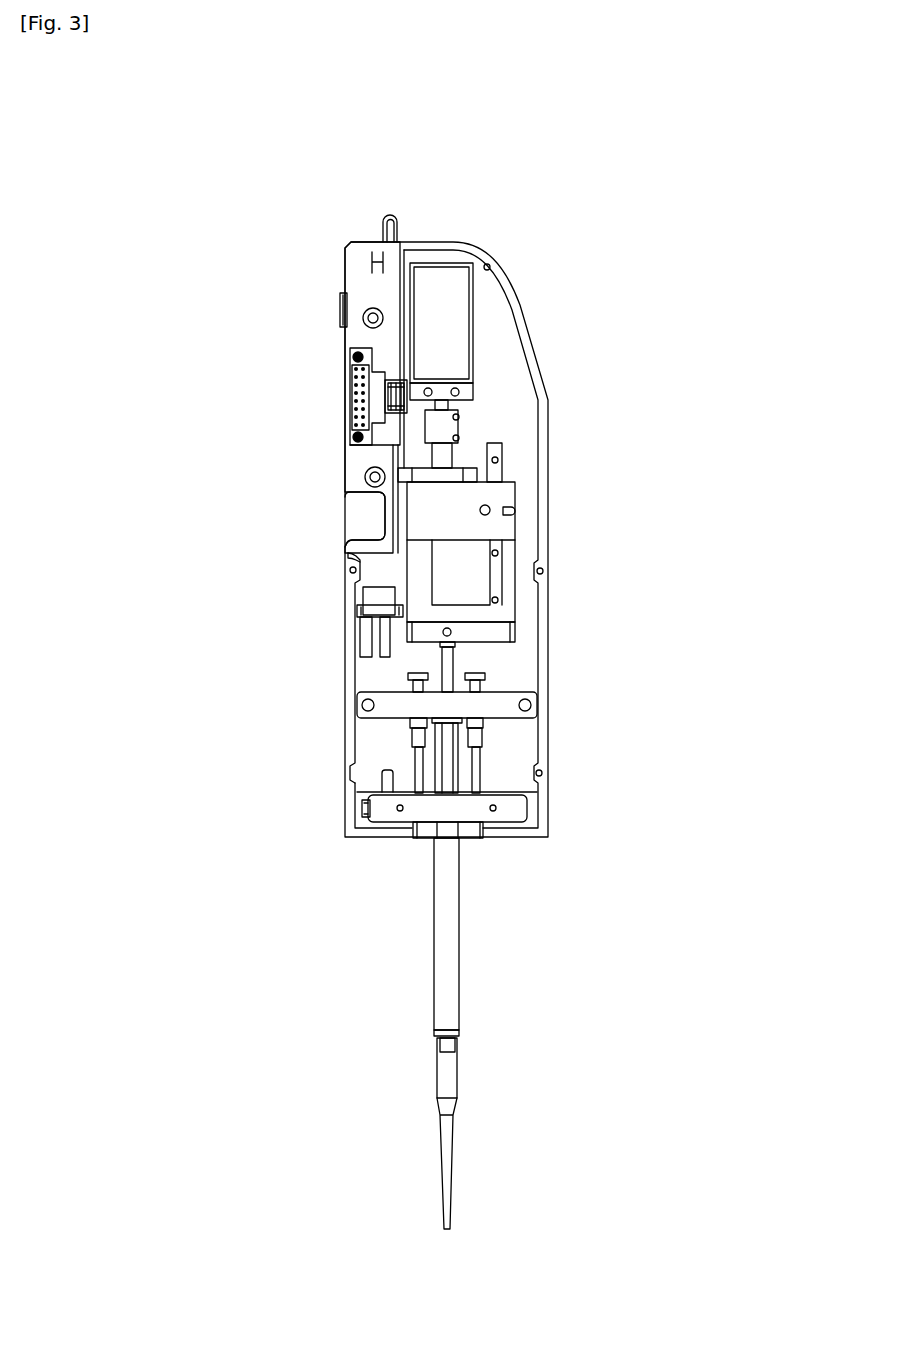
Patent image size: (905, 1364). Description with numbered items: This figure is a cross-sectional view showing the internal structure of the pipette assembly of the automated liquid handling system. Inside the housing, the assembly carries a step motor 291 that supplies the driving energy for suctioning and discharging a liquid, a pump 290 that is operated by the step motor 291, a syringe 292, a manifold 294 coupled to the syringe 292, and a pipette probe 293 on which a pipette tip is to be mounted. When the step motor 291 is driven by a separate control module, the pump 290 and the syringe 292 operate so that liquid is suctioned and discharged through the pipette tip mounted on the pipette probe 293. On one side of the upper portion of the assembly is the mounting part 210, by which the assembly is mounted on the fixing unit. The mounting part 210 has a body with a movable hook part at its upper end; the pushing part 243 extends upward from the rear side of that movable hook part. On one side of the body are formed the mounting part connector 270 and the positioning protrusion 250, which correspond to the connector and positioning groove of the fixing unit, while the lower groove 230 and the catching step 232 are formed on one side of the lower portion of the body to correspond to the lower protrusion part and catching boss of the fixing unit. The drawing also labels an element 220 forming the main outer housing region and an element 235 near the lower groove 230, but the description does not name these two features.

The mounting part 210 is at (327, 462).
The second body (housing) 220 is at (550, 597).
The lower groove 230 is at (337, 538).
The catching step 232 is at (347, 503).
The protrusion 235 is at (350, 550).
The pushing part 243 is at (380, 206).
The positioning protrusion 250 is at (327, 307).
The mounting part connector 270 is at (327, 400).
The pump 290 is at (493, 493).
The step motor 291 is at (450, 318).
The syringe 292 is at (448, 754).
The pipette probe 293 is at (460, 963).
The manifold 294 is at (513, 810).